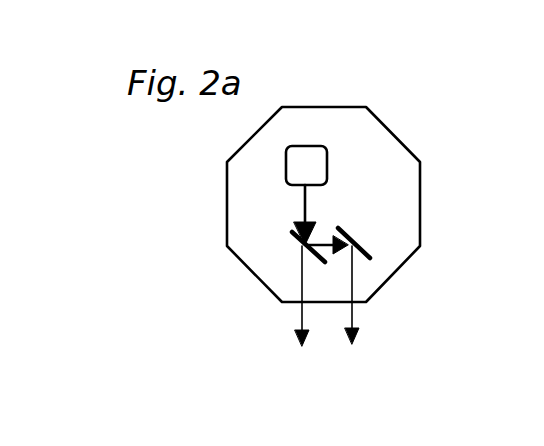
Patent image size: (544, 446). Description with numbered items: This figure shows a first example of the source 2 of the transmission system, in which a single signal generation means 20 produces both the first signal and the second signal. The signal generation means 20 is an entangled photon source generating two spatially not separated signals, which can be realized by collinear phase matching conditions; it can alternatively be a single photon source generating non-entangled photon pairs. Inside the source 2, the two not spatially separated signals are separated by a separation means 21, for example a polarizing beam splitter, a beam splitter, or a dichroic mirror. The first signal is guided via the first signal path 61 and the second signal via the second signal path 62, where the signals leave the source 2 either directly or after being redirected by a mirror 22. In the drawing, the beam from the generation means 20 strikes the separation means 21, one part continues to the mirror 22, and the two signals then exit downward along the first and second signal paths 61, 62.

The source 2 is at (377, 145).
The signal generation means 20 is at (297, 172).
The separation means 21 is at (290, 237).
The mirror 22 is at (367, 250).
The first signal path 61 is at (297, 315).
The second signal path 62 is at (352, 312).